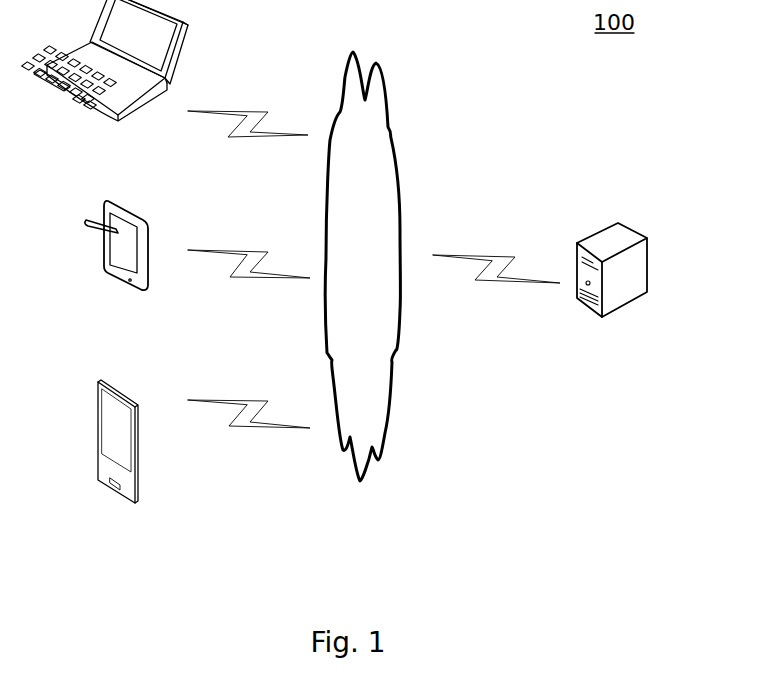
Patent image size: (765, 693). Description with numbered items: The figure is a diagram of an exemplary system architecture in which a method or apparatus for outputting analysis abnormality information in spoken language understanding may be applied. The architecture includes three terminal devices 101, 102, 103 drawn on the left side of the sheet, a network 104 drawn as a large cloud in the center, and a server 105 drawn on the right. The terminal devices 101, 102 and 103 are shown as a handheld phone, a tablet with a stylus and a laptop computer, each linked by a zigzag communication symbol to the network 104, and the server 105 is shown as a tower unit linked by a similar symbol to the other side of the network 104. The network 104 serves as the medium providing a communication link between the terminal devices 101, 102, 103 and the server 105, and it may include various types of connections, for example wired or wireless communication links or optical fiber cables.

The terminal device 101 is at (120, 462).
The terminal device 102 is at (116, 263).
The terminal device 103 is at (105, 77).
The network 104 is at (362, 266).
The server 105 is at (612, 293).